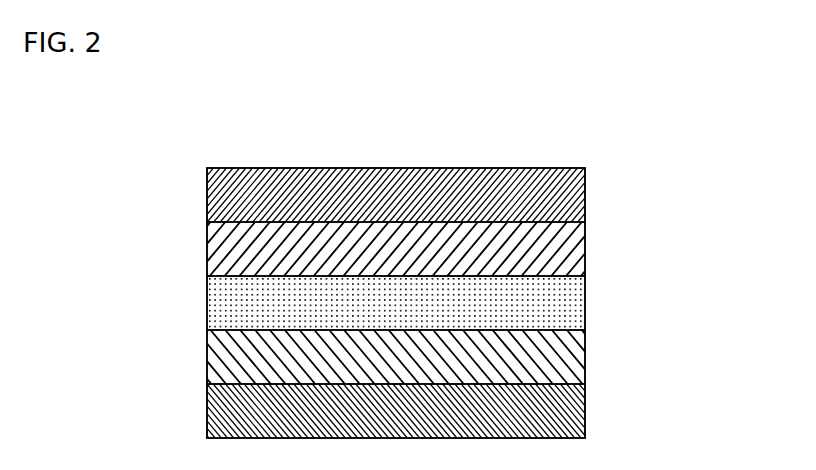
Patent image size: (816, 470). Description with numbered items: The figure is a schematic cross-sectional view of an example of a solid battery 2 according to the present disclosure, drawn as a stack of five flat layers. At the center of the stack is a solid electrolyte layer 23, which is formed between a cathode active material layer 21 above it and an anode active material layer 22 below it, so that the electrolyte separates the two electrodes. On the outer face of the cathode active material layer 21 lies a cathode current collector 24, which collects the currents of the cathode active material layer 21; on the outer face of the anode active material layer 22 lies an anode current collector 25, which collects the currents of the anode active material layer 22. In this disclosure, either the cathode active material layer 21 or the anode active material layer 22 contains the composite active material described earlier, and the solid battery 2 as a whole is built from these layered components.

The solid battery 2 is at (679, 125).
The cathode active material layer 21 is at (558, 257).
The anode active material layer 22 is at (558, 357).
The solid electrolyte layer 23 is at (558, 304).
The cathode current collector 24 is at (558, 200).
The anode current collector 25 is at (558, 410).